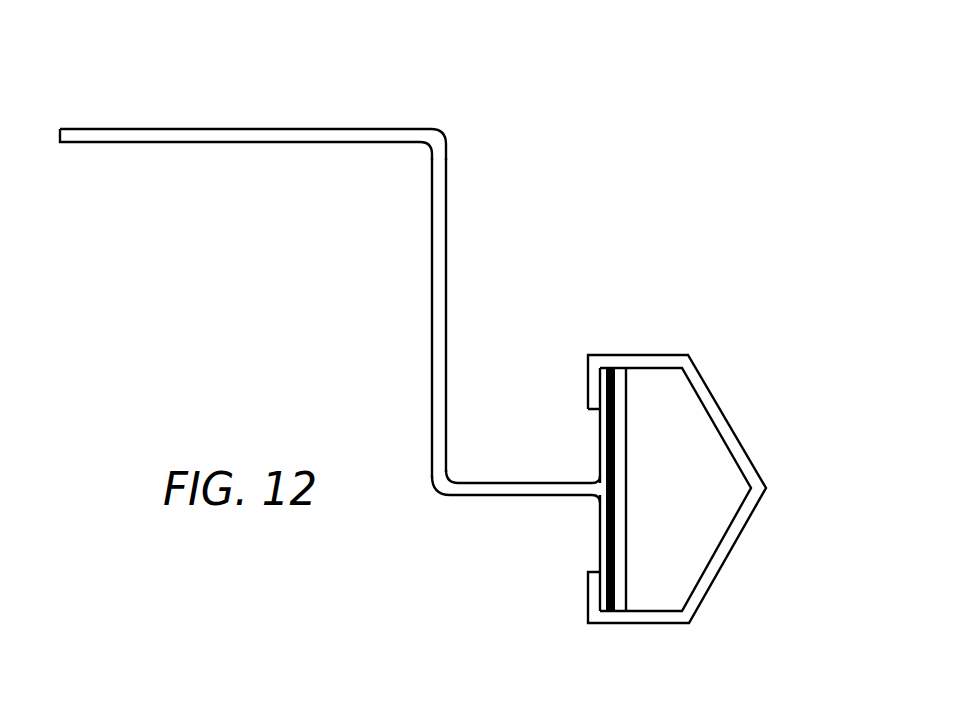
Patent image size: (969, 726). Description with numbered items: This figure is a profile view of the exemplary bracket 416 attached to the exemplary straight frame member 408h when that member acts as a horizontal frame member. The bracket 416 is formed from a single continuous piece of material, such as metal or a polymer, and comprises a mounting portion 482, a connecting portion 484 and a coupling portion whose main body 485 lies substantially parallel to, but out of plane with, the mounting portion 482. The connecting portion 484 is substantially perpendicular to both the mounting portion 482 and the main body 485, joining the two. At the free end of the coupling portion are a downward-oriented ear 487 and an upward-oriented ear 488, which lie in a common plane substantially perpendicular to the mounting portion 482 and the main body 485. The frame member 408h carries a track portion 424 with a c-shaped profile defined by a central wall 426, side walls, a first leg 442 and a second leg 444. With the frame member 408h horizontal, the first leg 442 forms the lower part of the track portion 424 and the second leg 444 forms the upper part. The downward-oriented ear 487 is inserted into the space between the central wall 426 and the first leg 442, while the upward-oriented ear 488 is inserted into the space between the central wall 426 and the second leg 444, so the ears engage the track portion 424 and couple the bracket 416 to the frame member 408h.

The bracket 416 is at (330, 279).
The mounting portion 482 is at (448, 124).
The connecting portion 484 is at (425, 493).
The main body 485 is at (492, 488).
The straight frame member 408h is at (677, 311).
The track portion 424 is at (628, 349).
The central wall 426 is at (614, 487).
The second leg 444 is at (588, 390).
The first leg 442 is at (588, 588).
The upward-oriented ear 488 is at (600, 452).
The downward-oriented ear 487 is at (601, 537).